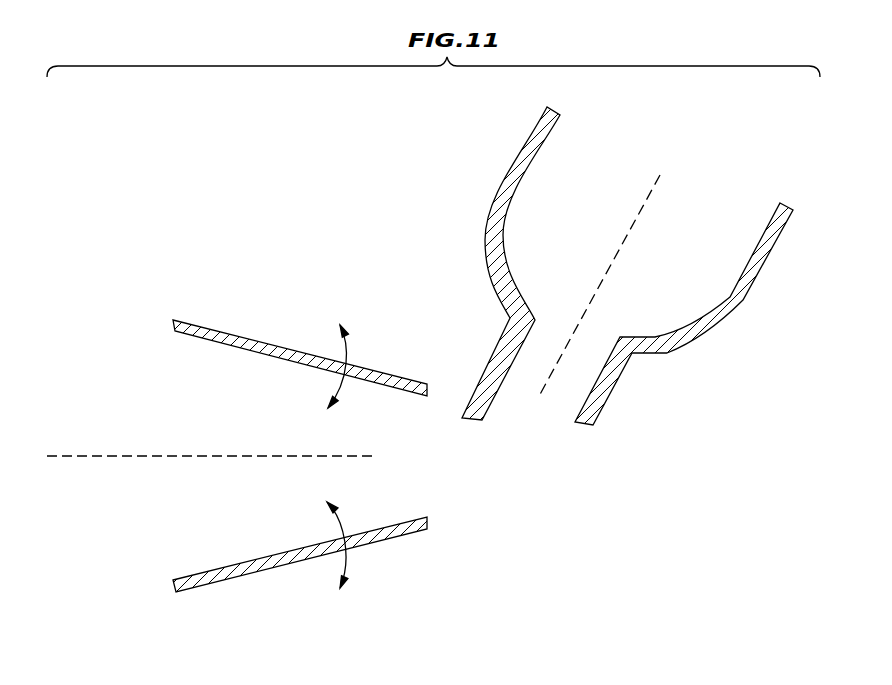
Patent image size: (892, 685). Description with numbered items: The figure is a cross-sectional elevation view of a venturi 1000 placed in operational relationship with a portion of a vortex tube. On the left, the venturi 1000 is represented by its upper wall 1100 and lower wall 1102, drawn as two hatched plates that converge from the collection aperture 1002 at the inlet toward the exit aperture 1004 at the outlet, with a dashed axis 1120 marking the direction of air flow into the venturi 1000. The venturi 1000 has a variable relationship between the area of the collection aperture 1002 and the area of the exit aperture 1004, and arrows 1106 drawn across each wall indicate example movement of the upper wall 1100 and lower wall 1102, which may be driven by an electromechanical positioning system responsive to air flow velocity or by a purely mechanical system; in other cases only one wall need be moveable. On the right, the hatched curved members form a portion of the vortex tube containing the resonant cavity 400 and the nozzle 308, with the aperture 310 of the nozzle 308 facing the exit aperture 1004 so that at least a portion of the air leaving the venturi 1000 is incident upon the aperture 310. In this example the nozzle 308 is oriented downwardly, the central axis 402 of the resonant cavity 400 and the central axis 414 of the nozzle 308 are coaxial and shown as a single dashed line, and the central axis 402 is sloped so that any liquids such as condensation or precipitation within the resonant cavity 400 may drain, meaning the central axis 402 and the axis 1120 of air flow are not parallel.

The nozzle 308 is at (622, 372).
The aperture 310 is at (565, 407).
The resonant cavity 400 is at (717, 251).
The central axis 402 is at (652, 192).
The central axis 414 is at (603, 283).
The venturi 1000 is at (262, 287).
The collection aperture 1002 is at (180, 373).
The exit aperture 1004 is at (427, 481).
The upper wall 1100 is at (283, 347).
The lower wall 1102 is at (287, 564).
The arrows 1106 is at (347, 350).
The axis of air flow 1120 is at (103, 456).